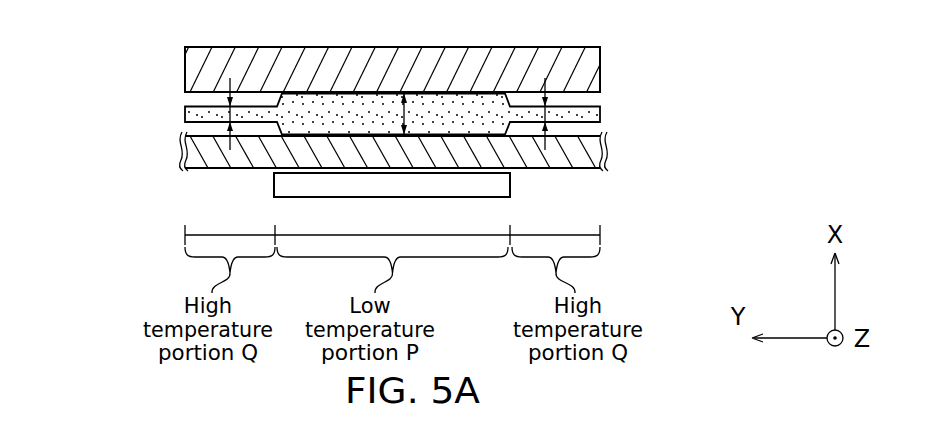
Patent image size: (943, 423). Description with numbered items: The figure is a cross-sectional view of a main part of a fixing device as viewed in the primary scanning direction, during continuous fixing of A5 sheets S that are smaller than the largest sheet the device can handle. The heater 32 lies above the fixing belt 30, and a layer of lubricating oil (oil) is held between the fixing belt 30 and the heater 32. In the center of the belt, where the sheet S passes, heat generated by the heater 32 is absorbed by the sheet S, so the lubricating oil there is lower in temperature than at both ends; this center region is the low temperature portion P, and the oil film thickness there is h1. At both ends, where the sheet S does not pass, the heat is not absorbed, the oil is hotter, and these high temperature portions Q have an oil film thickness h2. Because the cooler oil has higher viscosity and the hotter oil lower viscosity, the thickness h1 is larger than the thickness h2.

The heater 32 is at (592, 60).
The fixing belt 30 is at (592, 160).
The sheet S is at (510, 185).
The oil film thickness in the low temperature portion h1 is at (405, 110).
The oil film thickness in the high temperature portion h2 is at (232, 110).
The lubricating oil is at (592, 115).